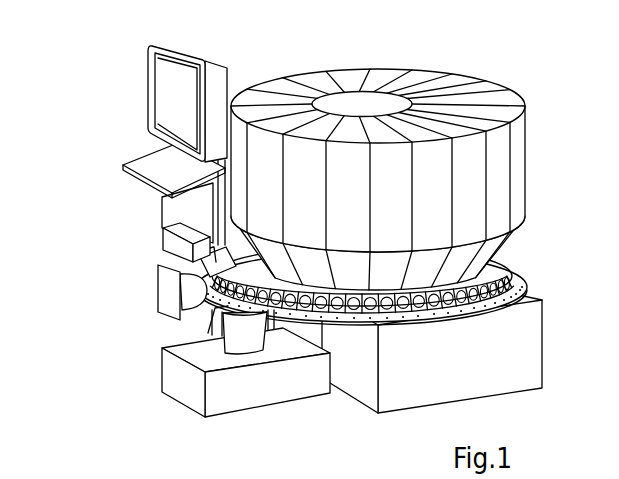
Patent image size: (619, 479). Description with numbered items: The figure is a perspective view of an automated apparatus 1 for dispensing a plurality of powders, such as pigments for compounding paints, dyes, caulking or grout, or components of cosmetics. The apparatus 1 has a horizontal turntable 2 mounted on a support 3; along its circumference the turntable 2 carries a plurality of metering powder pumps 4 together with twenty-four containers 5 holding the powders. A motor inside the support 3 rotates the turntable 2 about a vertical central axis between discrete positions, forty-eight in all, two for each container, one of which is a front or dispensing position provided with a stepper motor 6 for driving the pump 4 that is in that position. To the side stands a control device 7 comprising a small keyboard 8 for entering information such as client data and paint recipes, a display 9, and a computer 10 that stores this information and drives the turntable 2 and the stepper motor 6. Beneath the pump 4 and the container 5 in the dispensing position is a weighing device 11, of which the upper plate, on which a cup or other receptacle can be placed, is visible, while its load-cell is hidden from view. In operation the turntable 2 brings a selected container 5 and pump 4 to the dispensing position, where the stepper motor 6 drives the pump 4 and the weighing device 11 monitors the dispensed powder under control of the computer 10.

The apparatus 1 is at (535, 61).
The turntable 2 is at (505, 267).
The support 3 is at (530, 329).
The metering powder pumps 4 is at (500, 253).
The containers 5 is at (513, 174).
The stepper motor 6 is at (158, 296).
The control device 7 is at (73, 45).
The keyboard 8 is at (143, 163).
The display 9 is at (162, 87).
The computer 10 is at (183, 212).
The weighing device 11 is at (173, 367).